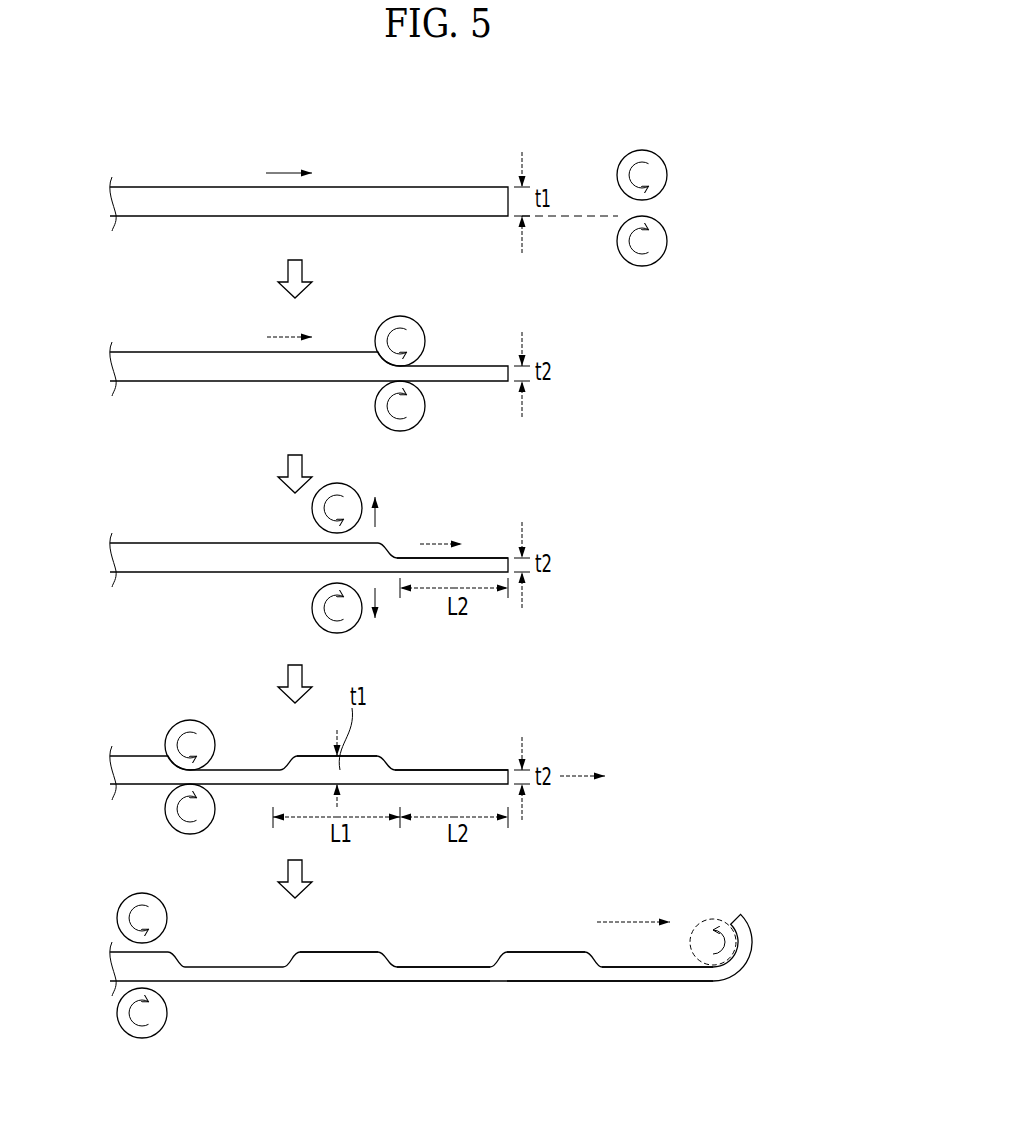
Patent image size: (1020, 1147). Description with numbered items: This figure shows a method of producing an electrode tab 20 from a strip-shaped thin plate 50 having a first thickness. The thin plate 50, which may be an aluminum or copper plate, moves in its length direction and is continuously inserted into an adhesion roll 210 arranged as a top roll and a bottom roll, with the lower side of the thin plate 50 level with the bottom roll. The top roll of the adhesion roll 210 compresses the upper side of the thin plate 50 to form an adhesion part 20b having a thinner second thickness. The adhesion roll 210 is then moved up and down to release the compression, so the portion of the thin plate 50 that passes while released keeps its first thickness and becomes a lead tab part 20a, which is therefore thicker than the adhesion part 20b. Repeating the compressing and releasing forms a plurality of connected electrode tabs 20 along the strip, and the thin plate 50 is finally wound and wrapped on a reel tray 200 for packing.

The strip-shaped thin plate 50 is at (437, 174).
The adhesion roll 210 is at (660, 158).
The reel tray 200 is at (356, 490).
The lead tab part 20a is at (372, 756).
The adhesion part 20b is at (487, 558).
The electrode tab 20 is at (460, 1044).